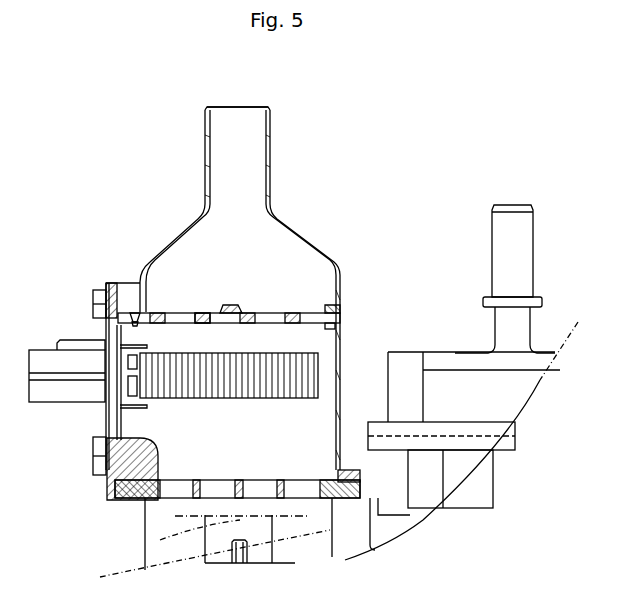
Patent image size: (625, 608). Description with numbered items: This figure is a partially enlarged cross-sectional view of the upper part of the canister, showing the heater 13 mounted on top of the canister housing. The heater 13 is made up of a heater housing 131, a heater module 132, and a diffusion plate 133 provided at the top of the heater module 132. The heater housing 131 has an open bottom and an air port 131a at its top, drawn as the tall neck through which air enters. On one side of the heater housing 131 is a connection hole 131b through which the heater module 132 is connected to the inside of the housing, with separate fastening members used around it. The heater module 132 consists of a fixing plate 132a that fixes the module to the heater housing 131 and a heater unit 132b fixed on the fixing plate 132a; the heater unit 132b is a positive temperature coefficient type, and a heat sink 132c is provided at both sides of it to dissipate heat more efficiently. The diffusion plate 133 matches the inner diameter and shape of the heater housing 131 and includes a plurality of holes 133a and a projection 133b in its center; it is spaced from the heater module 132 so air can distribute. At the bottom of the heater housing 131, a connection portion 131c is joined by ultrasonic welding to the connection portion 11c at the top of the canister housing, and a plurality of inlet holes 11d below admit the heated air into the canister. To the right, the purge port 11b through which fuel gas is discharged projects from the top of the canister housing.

The heater 13 is at (110, 162).
The heater housing 131 is at (293, 228).
The air port 131a is at (213, 128).
The connection hole 131b is at (138, 312).
The connection portion 131c is at (352, 470).
The diffusion plate 133 is at (316, 272).
The holes 133a is at (210, 313).
The projection 133b is at (272, 310).
The heater module 132 is at (102, 418).
The fixing plate 132a is at (138, 292).
The heater unit 132b is at (282, 355).
The heat sink 132c is at (66, 352).
The purge port 11b is at (503, 242).
The connection portion 11c is at (175, 493).
The inlet holes 11d is at (175, 525).